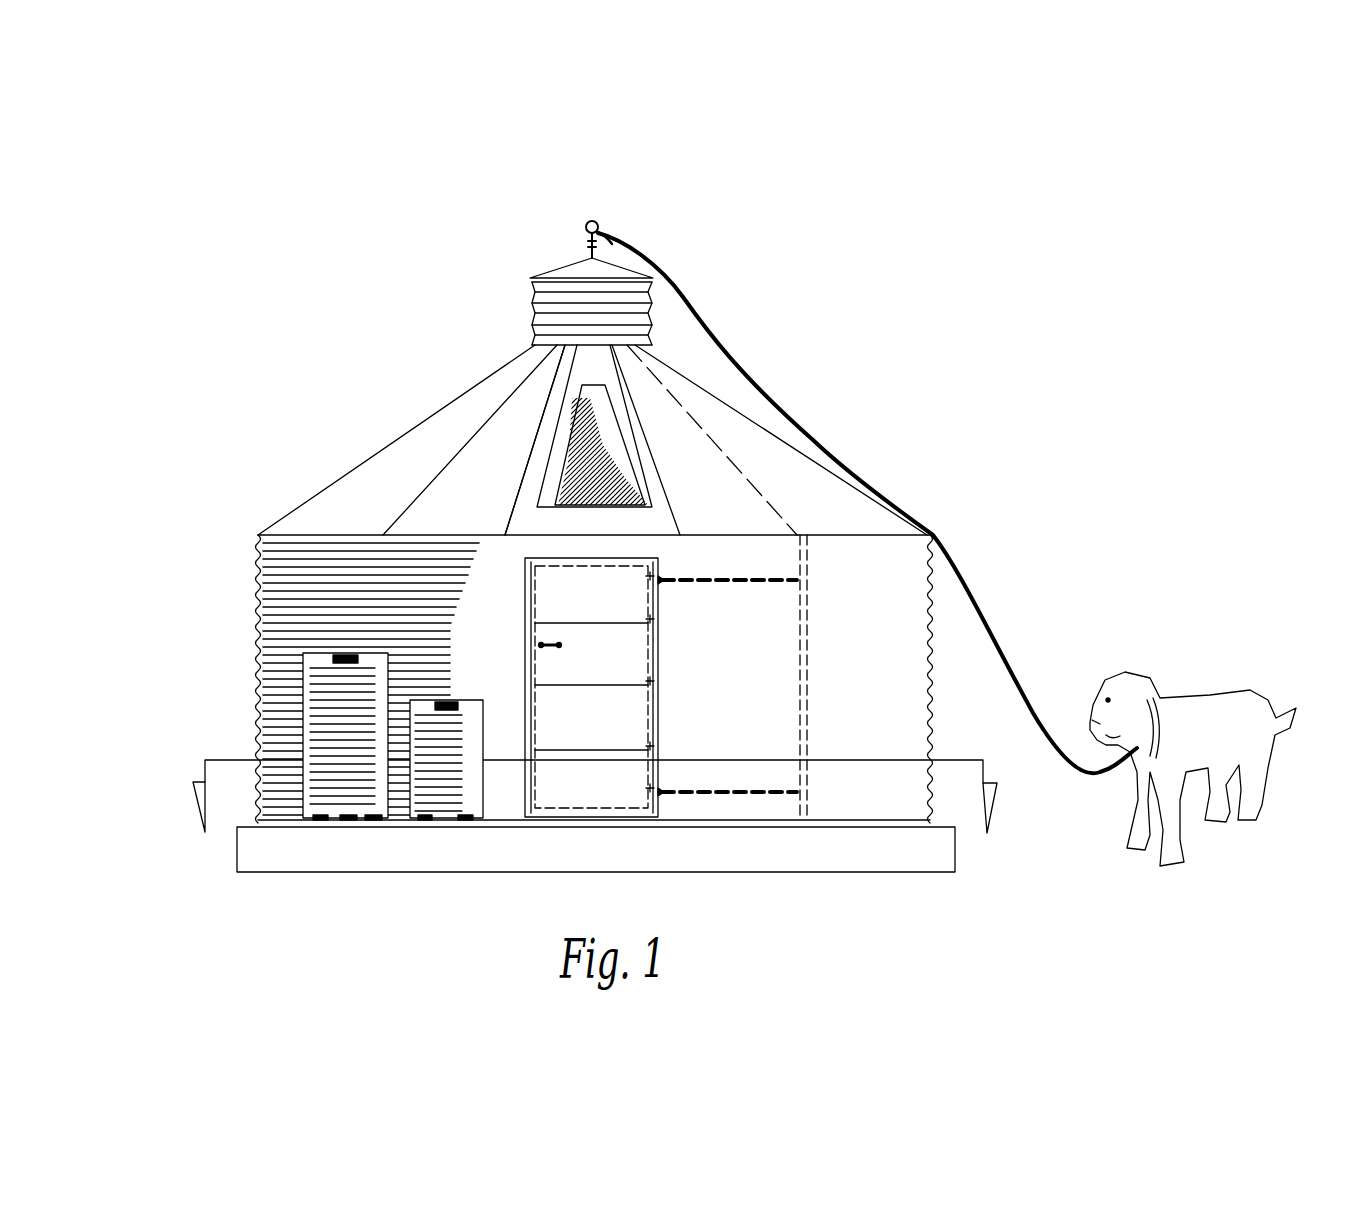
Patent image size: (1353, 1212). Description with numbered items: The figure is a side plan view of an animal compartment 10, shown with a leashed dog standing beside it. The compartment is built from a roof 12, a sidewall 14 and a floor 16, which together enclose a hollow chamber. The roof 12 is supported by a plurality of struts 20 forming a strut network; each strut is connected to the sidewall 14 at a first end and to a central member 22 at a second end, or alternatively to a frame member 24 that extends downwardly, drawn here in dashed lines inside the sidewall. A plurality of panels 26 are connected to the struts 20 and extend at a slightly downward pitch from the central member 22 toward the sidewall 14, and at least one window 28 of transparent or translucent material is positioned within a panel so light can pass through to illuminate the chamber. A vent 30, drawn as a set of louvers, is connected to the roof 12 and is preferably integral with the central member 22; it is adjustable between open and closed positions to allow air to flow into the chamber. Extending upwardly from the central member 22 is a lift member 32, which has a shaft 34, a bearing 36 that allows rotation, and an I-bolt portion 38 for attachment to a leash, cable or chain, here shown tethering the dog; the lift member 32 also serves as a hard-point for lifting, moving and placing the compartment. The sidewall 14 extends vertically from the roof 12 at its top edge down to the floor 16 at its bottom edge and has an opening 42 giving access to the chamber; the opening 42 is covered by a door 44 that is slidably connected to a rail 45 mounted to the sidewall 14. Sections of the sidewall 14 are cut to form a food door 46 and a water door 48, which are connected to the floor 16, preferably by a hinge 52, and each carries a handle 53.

The animal compartment 10 is at (300, 312).
The roof 12 is at (850, 480).
The sidewall 14 is at (932, 690).
The floor 16 is at (884, 830).
The struts 20 is at (760, 386).
The central member 22 is at (558, 265).
The frame member 24 is at (806, 665).
The panels 26 is at (415, 450).
The window 28 is at (555, 445).
The vent 30 is at (530, 302).
The lift member 32 is at (588, 203).
The shaft 34 is at (608, 238).
The bearing 36 is at (585, 240).
The I-bolt portion 38 is at (592, 218).
The opening 42 is at (683, 635).
The door 44 is at (611, 670).
The rail 45 is at (740, 795).
The food door 46 is at (300, 700).
The water door 48 is at (485, 795).
The hinge 52 is at (345, 822).
The handle 53 is at (445, 700).